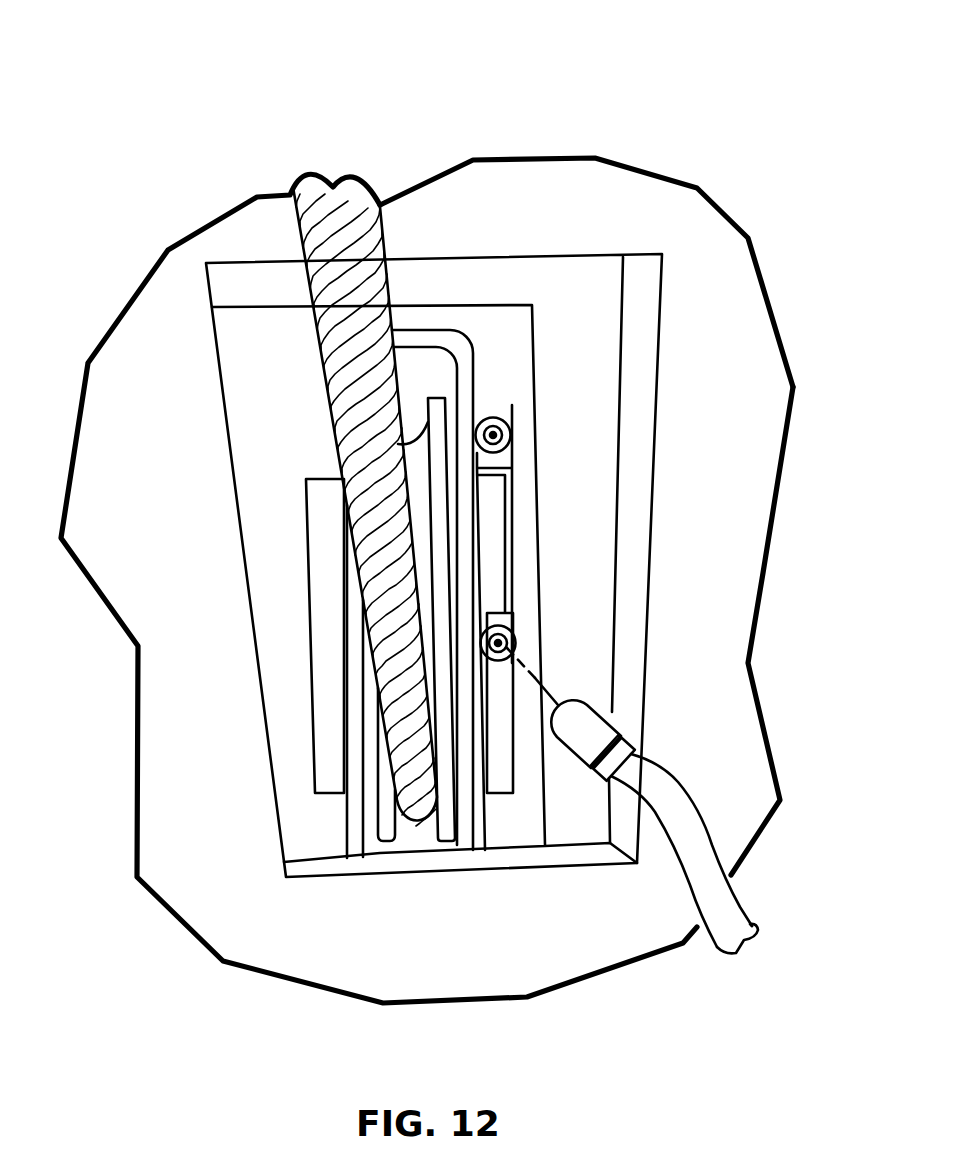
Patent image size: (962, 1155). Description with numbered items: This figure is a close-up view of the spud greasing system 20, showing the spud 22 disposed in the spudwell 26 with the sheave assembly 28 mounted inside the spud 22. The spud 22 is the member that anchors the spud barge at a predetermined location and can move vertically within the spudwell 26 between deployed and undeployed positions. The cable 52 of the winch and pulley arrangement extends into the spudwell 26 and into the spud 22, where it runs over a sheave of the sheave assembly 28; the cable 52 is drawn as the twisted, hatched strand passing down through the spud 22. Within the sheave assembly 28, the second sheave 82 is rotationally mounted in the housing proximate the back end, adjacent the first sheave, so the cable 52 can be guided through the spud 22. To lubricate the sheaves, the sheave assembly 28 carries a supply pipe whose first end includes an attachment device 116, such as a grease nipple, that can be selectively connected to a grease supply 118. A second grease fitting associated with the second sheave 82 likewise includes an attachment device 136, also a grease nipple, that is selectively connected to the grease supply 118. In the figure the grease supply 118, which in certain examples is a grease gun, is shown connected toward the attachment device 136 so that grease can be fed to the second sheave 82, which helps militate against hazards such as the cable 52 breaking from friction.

The spud greasing system 20 is at (148, 92).
The spud 22 is at (583, 387).
The spudwell 26 is at (500, 207).
The sheave assembly 28 is at (331, 592).
The cable 52 is at (328, 255).
The second sheave 82 is at (440, 397).
The attachment device 116 is at (500, 433).
The grease supply 118 is at (595, 725).
The attachment device 136 is at (503, 641).